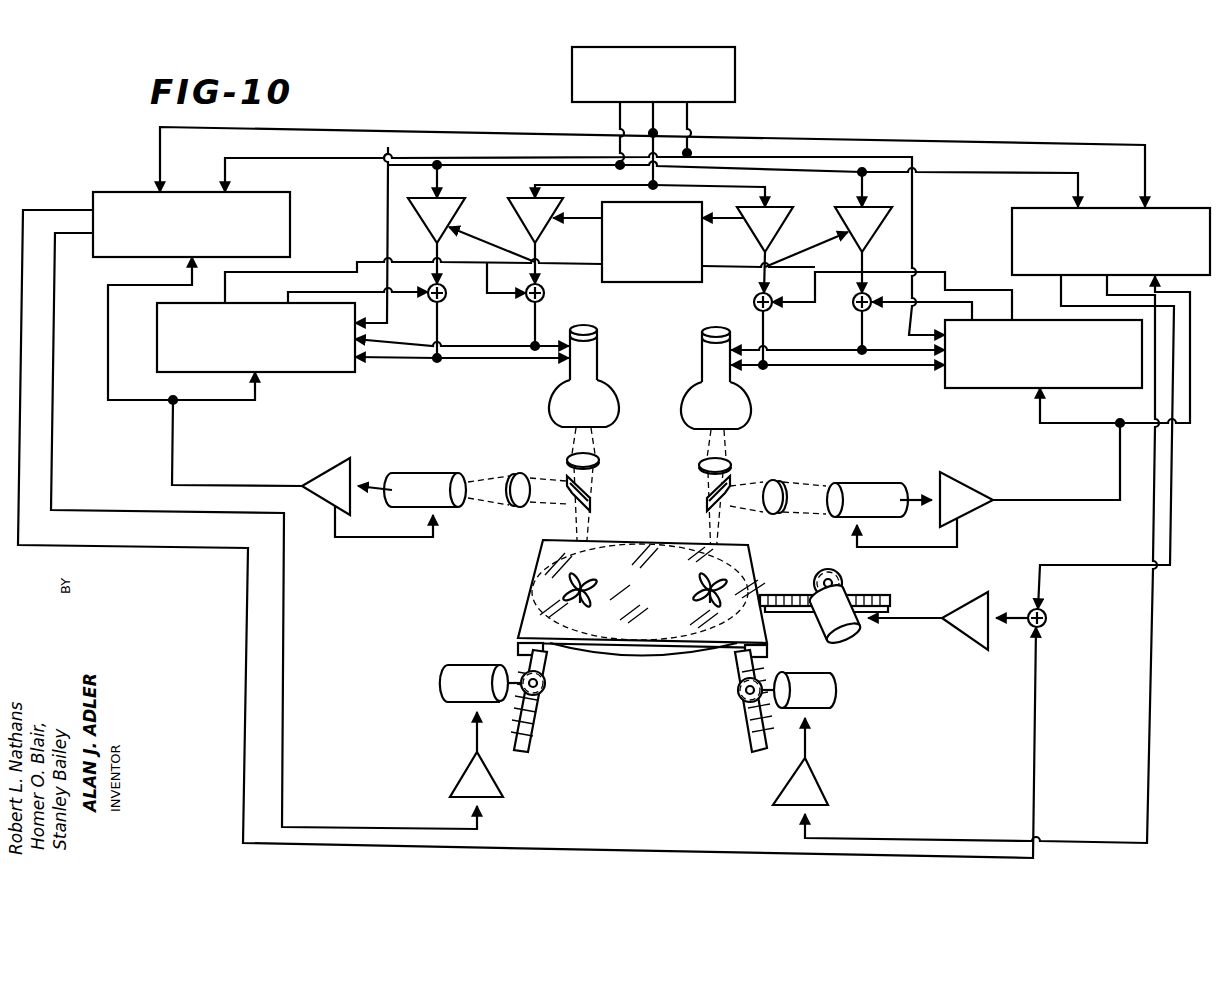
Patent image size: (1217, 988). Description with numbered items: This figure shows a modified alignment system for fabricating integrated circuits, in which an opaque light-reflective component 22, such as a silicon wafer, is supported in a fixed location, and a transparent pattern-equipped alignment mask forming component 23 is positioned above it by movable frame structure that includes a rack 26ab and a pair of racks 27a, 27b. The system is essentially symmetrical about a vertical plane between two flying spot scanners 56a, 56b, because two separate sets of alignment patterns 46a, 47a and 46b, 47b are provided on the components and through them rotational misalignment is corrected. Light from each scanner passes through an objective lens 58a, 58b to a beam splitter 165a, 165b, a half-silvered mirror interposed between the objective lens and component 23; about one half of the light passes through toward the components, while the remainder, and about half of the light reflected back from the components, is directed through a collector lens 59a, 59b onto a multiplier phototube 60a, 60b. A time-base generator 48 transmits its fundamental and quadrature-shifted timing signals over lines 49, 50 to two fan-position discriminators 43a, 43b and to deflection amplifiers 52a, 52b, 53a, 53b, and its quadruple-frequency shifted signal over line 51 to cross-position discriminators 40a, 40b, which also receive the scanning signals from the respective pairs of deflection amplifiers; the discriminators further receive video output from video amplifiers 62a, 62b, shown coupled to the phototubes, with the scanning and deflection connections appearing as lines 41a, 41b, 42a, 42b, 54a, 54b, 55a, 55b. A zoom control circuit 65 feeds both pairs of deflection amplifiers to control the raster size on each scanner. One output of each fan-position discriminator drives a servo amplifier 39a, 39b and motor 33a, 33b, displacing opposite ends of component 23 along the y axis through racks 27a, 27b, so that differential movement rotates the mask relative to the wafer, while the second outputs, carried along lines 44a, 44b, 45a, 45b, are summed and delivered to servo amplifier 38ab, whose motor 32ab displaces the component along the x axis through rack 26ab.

The time-base generator 48 is at (572, 70).
The line 50 is at (390, 127).
The line 49 is at (252, 158).
The line 51 is at (388, 147).
The fan-position discriminator 43a is at (120, 192).
The fan-position discriminator 43b is at (1196, 192).
The cross-position discriminator 40a is at (308, 372).
The cross-position discriminator 40b is at (997, 388).
The zoom control circuit 65 is at (630, 282).
The deflection amplifier 52a is at (462, 205).
The deflection amplifier 52b is at (842, 214).
The deflection amplifier 53a is at (512, 222).
The deflection amplifier 53b is at (778, 210).
The summing circuit input line 41a is at (288, 292).
The summing circuit input line 41b is at (905, 304).
The summing circuit input line 42a is at (357, 262).
The summing circuit input line 42b is at (945, 272).
The deflection signal line 54a is at (405, 360).
The deflection signal line 54b is at (782, 367).
The deflection signal line 55a is at (510, 346).
The deflection signal line 55b is at (820, 334).
The flying spot scanner 56a is at (547, 405).
The flying spot scanner 56b is at (682, 400).
The objective lens 58a is at (600, 462).
The objective lens 58b is at (731, 465).
The beam splitter 165a is at (592, 491).
The beam splitter 165b is at (707, 508).
The collector lens 59a is at (520, 475).
The collector lens 59b is at (790, 472).
The multiplier phototube 60a is at (428, 466).
The multiplier phototube 60b is at (860, 483).
The video amplifier 62a is at (325, 470).
The video amplifier 62b is at (960, 480).
The pattern-equipped component 23 is at (543, 585).
The light-reflective component 22 is at (640, 656).
The alignment pattern 47a is at (590, 588).
The alignment pattern 47b is at (700, 588).
The alignment pattern 46a is at (580, 605).
The alignment pattern 46b is at (710, 605).
The rack 27a is at (521, 750).
The rack 27b is at (745, 740).
The servo motor 33a is at (486, 656).
The servo motor 33b is at (838, 692).
The servo amplifier 39a is at (452, 795).
The servo amplifier 39b is at (812, 786).
The fan position signal line 44a is at (243, 672).
The fan position signal line 44b is at (1088, 550).
The fan position signal line 45a is at (283, 690).
The fan position signal line 45b is at (1148, 636).
The servo amplifier 38ab is at (960, 602).
The rack 26ab is at (858, 596).
The servo motor 32ab is at (845, 637).